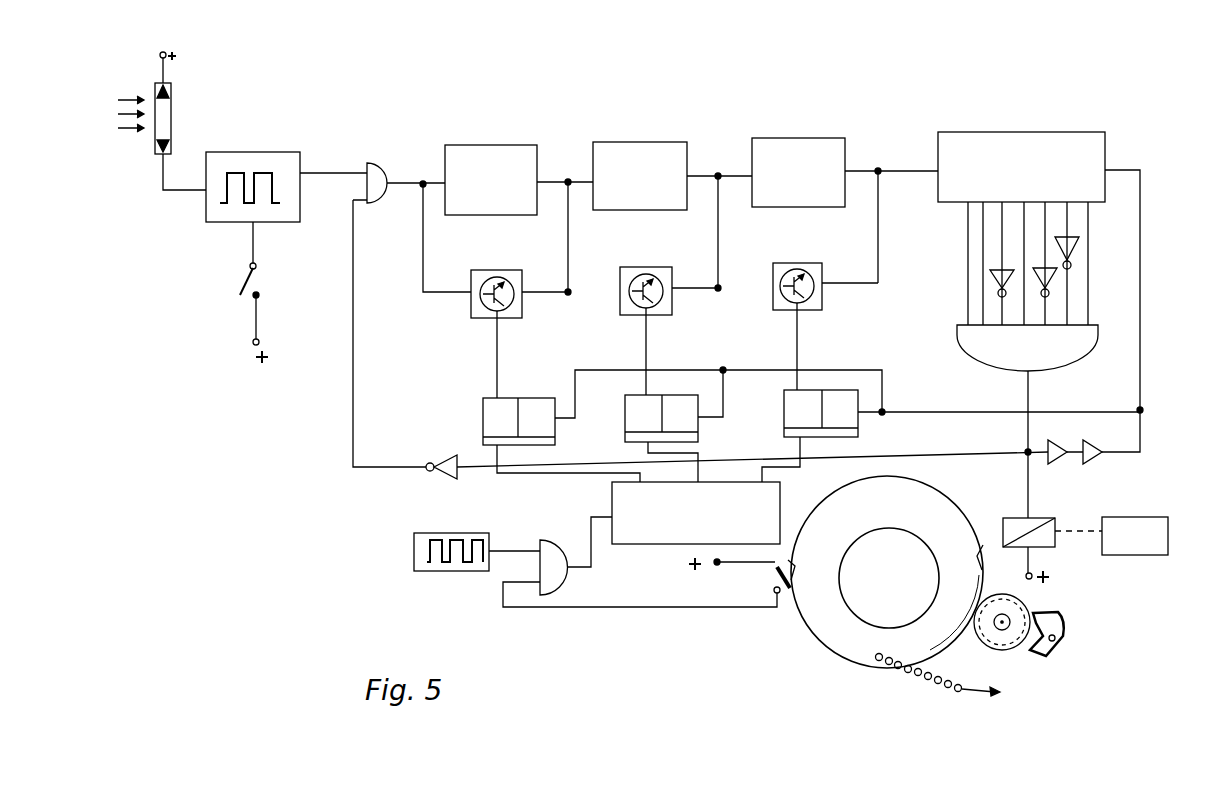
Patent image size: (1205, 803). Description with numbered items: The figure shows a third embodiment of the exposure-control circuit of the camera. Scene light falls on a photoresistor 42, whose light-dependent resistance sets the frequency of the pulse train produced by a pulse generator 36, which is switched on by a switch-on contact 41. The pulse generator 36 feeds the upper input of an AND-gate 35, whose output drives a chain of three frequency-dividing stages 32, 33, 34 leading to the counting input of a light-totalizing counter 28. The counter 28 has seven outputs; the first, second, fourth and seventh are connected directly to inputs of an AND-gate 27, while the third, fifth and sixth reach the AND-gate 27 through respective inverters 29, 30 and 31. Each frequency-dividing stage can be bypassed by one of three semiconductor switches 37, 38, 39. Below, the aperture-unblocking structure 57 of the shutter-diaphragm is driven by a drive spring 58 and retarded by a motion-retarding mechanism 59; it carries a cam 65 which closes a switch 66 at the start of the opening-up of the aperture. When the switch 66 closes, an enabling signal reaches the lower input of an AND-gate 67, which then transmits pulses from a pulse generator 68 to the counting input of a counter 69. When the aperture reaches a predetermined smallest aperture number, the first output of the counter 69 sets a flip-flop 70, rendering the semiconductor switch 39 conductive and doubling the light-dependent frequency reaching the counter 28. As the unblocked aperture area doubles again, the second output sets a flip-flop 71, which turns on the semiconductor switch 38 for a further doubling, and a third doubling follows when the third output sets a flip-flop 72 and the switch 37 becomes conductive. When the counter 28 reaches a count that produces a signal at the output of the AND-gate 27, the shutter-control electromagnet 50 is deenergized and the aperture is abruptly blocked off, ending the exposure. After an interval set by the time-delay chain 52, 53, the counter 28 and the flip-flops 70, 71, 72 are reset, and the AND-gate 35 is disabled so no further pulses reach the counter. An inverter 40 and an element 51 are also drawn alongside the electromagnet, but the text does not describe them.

The photoresistor 42 is at (176, 116).
The pulse generator 36 is at (276, 158).
The AND-gate 35 is at (378, 177).
The frequency-dividing stage 34 is at (468, 165).
The frequency-dividing stage 33 is at (616, 160).
The frequency-dividing stage 32 is at (776, 155).
The light-totalizing counter 28 is at (968, 148).
The inverter 29 is at (990, 277).
The inverter 30 is at (1040, 284).
The inverter 31 is at (1074, 248).
The AND-gate 27 is at (992, 355).
The semiconductor switch 39 is at (476, 311).
The semiconductor switch 38 is at (626, 308).
The semiconductor switch 37 is at (779, 305).
The flip-flop 70 is at (488, 410).
The flip-flop 71 is at (637, 406).
The flip-flop 72 is at (791, 402).
The inverter 40 is at (441, 458).
The pulse generator 68 is at (447, 533).
The counter 69 is at (612, 511).
The AND-gate 67 is at (556, 568).
The switch 66 is at (771, 581).
The cam 65 is at (946, 504).
The aperture-unblocking structure 57 is at (845, 630).
The drive spring 58 is at (948, 678).
The motion-retarding mechanism 59 is at (1016, 612).
The time-delay chain element 52 is at (1057, 463).
The time-delay chain element 53 is at (1092, 463).
The shutter-control electromagnet 50 is at (1050, 542).
The actuator 51 is at (1148, 527).
The switch-on contact 41 is at (259, 296).